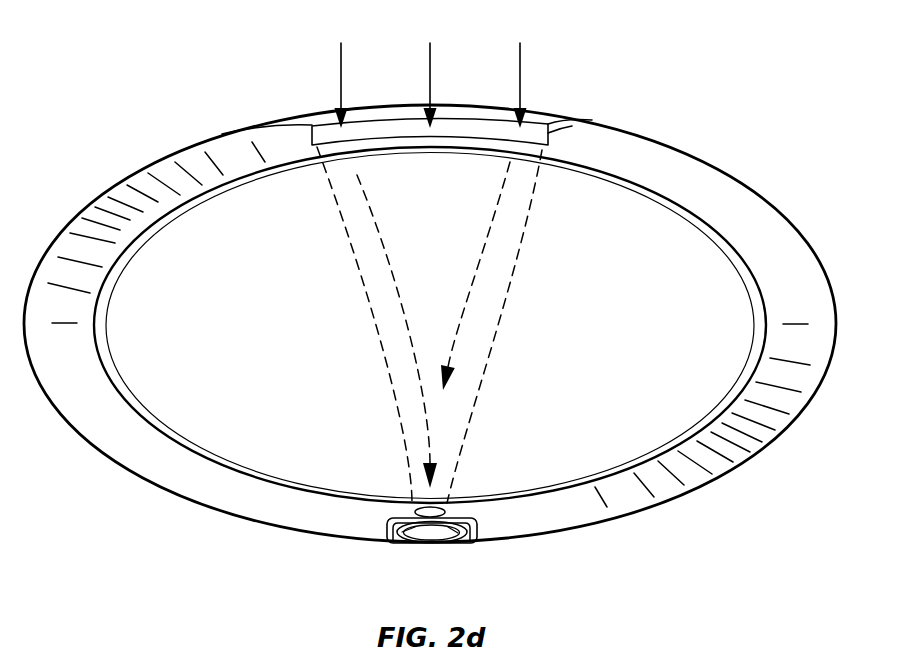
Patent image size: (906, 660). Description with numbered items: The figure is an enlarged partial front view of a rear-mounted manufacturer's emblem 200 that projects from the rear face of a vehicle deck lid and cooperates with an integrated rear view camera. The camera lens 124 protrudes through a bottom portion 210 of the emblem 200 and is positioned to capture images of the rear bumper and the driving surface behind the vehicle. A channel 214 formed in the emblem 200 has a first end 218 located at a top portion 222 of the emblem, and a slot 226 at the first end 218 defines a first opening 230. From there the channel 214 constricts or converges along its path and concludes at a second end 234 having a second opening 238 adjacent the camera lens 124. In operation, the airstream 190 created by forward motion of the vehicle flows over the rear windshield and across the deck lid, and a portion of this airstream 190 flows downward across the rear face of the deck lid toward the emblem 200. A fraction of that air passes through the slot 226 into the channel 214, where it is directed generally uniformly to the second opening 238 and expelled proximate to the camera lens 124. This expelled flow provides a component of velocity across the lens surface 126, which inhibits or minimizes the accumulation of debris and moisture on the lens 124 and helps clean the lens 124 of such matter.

The emblem 200 is at (662, 163).
The top portion 222 is at (549, 97).
The slot 226 is at (308, 131).
The first opening 230 is at (327, 130).
The first end 218 is at (549, 135).
The airstream 190 is at (432, 71).
The channel 214 is at (503, 240).
The second opening 238 is at (445, 512).
The second end 234 is at (408, 507).
The bottom portion 210 is at (470, 547).
The camera lens 124 is at (443, 527).
The lens surface 126 is at (422, 528).